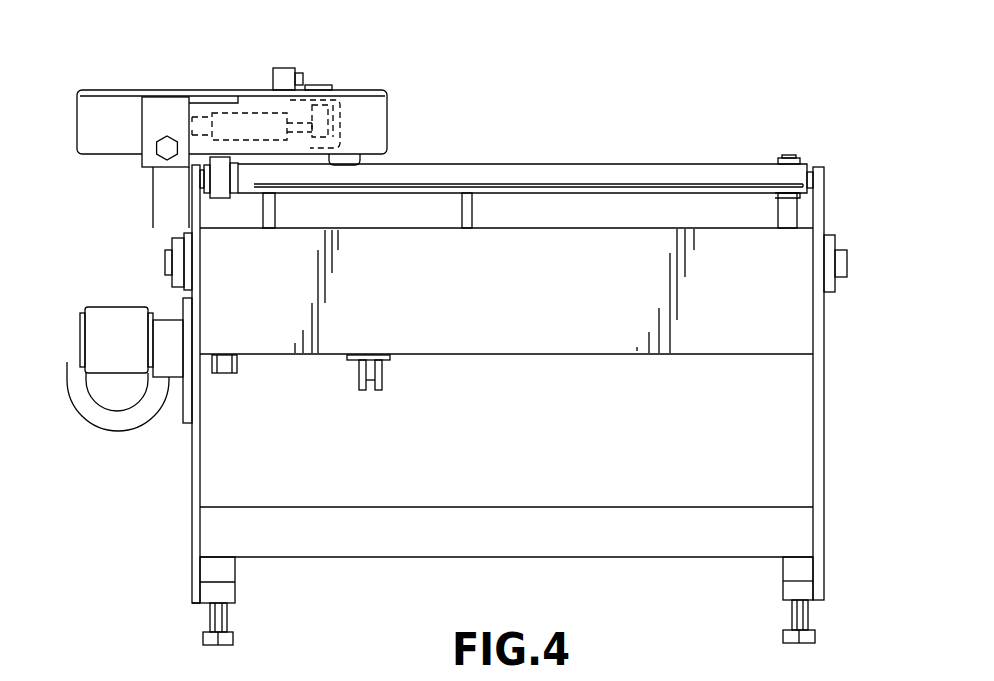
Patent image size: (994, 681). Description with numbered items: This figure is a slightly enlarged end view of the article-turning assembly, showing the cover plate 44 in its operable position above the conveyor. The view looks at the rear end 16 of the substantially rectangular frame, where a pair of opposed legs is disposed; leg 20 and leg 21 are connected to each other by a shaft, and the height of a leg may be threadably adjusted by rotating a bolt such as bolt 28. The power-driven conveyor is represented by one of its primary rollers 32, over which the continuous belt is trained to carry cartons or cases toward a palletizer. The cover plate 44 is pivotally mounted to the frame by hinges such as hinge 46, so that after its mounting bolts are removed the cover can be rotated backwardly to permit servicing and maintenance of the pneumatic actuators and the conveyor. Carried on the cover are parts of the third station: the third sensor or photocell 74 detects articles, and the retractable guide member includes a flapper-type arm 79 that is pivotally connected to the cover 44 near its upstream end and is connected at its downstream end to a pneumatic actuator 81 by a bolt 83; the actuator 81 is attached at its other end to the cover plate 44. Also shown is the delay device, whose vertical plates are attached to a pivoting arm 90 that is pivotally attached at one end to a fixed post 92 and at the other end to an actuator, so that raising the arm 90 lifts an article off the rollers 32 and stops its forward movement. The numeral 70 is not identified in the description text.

The rear end 16 is at (805, 330).
The leg 20 is at (824, 575).
The leg 21 is at (191, 580).
The bolt 28 is at (786, 613).
The primary roller 32 is at (708, 164).
The cover plate 44 is at (121, 90).
The hinge 46 is at (141, 168).
The motor 70 is at (129, 489).
The third sensor or photocell 74 is at (285, 68).
The flapper-type arm 79 is at (340, 128).
The pneumatic actuator 81 is at (250, 113).
The bolt 83 is at (323, 85).
The pivoting arm 90 is at (462, 210).
The fixed post 92 is at (350, 361).